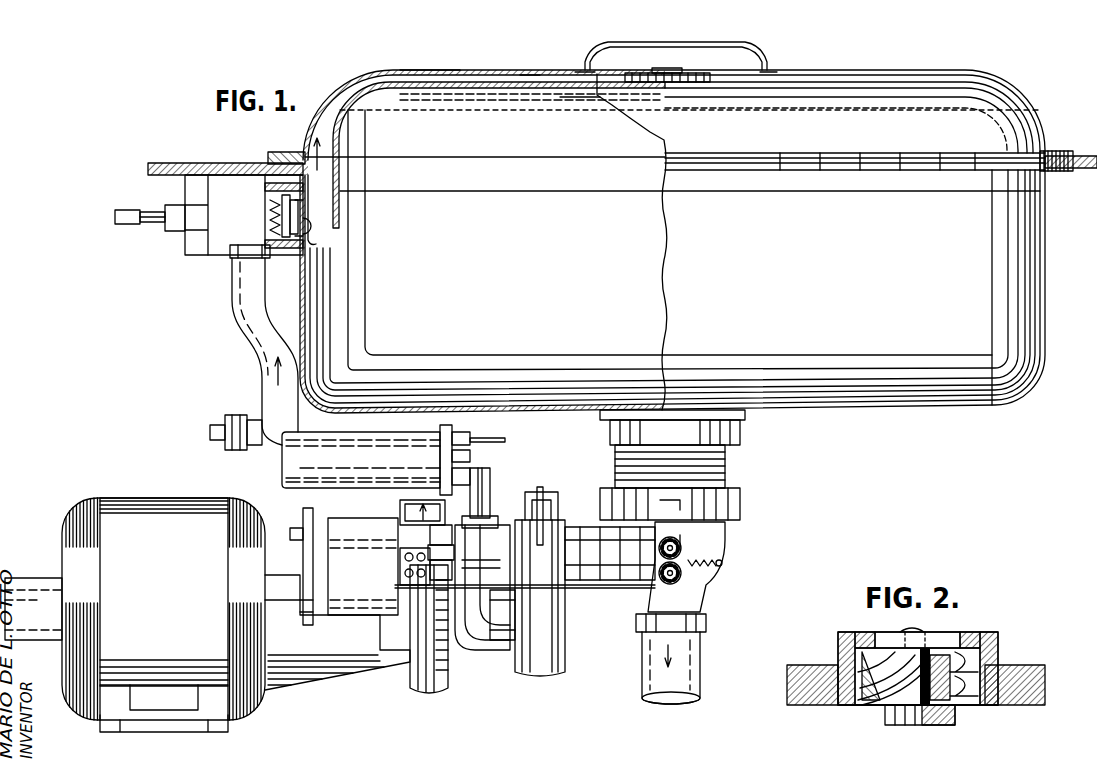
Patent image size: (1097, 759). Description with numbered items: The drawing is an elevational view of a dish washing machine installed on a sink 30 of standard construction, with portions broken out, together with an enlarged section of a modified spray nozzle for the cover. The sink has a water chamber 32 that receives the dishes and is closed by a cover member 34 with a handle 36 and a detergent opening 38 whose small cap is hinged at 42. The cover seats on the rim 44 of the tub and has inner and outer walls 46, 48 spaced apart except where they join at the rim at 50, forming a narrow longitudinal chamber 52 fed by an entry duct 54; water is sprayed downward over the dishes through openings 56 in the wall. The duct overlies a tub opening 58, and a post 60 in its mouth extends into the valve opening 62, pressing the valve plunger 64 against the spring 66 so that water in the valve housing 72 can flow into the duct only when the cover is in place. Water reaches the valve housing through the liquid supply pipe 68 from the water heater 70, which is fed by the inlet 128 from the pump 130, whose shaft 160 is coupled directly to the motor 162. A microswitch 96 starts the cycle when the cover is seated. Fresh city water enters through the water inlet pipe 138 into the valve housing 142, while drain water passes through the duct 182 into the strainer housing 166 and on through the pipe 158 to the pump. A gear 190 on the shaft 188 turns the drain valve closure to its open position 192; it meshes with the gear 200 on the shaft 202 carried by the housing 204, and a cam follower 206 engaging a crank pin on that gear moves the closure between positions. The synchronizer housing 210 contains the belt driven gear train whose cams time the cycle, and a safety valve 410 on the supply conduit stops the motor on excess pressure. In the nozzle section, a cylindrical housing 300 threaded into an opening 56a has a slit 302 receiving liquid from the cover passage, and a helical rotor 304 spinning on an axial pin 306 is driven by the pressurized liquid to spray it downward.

In FIG. 1, the sink 30 is at (1000, 404).
In FIG. 1, the water chamber 32 is at (509, 277).
In FIG. 1, the cover member 34 is at (428, 68).
In FIG. 1, the handle 36 is at (648, 45).
In FIG. 1, the opening 38 is at (683, 82).
In FIG. 1, the hinge 42 is at (657, 72).
In FIG. 1, the rim 44 is at (270, 160).
In FIG. 1, the inner wall 46 is at (508, 70).
In FIG. 1, the outer wall 48 is at (500, 90).
In FIG. 2, the outer wall 48 is at (1020, 665).
In FIG. 1, the rim joint 50 is at (1052, 158).
In FIG. 1, the longitudinal chamber 52 is at (512, 78).
In FIG. 1, the entry duct 54 is at (328, 152).
In FIG. 1, the openings 56 is at (586, 90).
In FIG. 2, the opening 56a is at (840, 700).
In FIG. 1, the tub opening 58 is at (312, 243).
In FIG. 1, the post 60 is at (303, 215).
In FIG. 1, the valve opening 62 is at (280, 256).
In FIG. 1, the valve plunger 64 is at (270, 230).
In FIG. 1, the spring 66 is at (268, 205).
In FIG. 1, the liquid supply pipe 68 is at (240, 357).
In FIG. 1, the water heater 70 is at (362, 438).
In FIG. 1, the valve housing 72 is at (190, 252).
In FIG. 1, the microswitch 96 is at (150, 210).
In FIG. 1, the inlet 128 is at (402, 504).
In FIG. 1, the pump 130 is at (420, 682).
In FIG. 1, the water inlet pipe 138 is at (507, 511).
In FIG. 1, the valve housing 142 is at (482, 587).
In FIG. 1, the pipe 158 is at (500, 638).
In FIG. 1, the shaft 160 is at (320, 618).
In FIG. 1, the motor 162 is at (190, 507).
In FIG. 1, the strainer housing 166 is at (545, 665).
In FIG. 1, the duct 182 is at (588, 590).
In FIG. 1, the shaft 188 is at (682, 548).
In FIG. 1, the gear 190 is at (685, 535).
In FIG. 1, the open position 192 is at (700, 652).
In FIG. 1, the gear 200 is at (672, 585).
In FIG. 1, the shaft 202 is at (685, 568).
In FIG. 1, the housing 204 is at (710, 594).
In FIG. 1, the cam follower 206 is at (600, 578).
In FIG. 1, the synchronizer housing 210 is at (363, 566).
In FIG. 2, the cylindrical housing 300 is at (996, 640).
In FIG. 2, the slit 302 is at (950, 638).
In FIG. 2, the helical rotor 304 is at (875, 705).
In FIG. 2, the axial pin 306 is at (922, 630).
In FIG. 1, the safety valve 410 is at (213, 450).